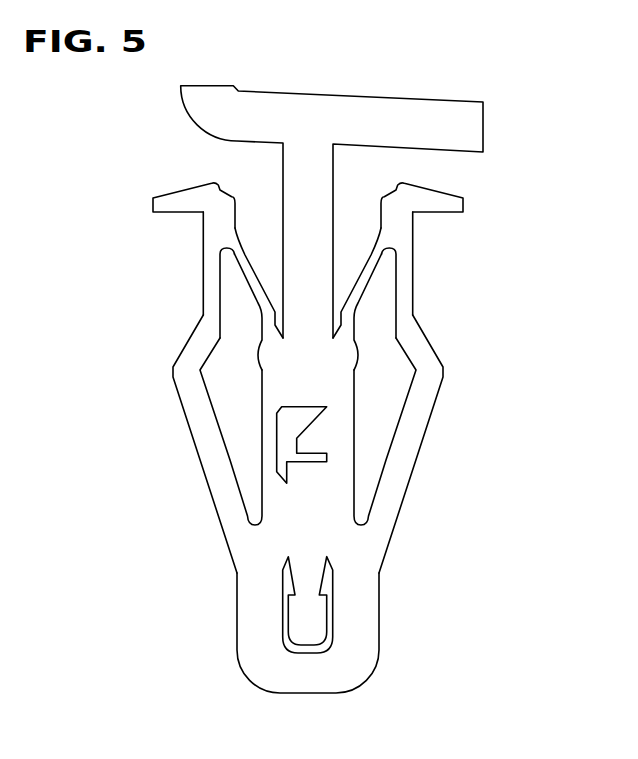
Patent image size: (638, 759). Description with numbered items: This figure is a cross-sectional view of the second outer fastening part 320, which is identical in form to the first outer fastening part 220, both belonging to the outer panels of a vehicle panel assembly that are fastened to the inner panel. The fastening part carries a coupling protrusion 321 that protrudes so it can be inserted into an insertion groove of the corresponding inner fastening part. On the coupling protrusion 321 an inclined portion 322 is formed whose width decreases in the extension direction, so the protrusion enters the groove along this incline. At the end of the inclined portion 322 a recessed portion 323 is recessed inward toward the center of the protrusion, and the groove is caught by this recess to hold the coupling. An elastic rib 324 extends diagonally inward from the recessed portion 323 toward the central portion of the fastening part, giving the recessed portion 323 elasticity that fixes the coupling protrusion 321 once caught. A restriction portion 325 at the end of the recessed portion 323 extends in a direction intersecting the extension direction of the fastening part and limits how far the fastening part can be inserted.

The second outer fastening part 320 is at (317, 393).
The first outer fastening part 220 is at (317, 389).
The coupling protrusion 321 is at (420, 538).
The inclined portion 322 is at (203, 432).
The recessed portion 323 is at (210, 250).
The elastic rib 324 is at (367, 273).
The restriction portion 325 is at (170, 200).